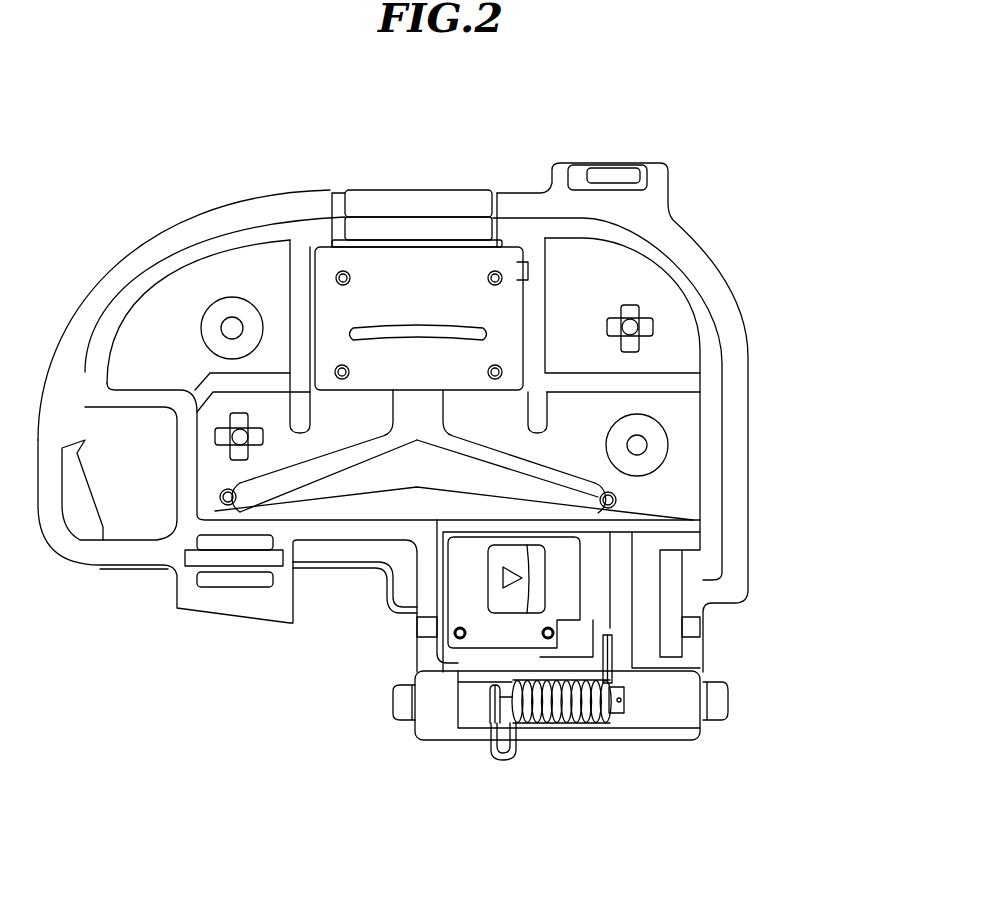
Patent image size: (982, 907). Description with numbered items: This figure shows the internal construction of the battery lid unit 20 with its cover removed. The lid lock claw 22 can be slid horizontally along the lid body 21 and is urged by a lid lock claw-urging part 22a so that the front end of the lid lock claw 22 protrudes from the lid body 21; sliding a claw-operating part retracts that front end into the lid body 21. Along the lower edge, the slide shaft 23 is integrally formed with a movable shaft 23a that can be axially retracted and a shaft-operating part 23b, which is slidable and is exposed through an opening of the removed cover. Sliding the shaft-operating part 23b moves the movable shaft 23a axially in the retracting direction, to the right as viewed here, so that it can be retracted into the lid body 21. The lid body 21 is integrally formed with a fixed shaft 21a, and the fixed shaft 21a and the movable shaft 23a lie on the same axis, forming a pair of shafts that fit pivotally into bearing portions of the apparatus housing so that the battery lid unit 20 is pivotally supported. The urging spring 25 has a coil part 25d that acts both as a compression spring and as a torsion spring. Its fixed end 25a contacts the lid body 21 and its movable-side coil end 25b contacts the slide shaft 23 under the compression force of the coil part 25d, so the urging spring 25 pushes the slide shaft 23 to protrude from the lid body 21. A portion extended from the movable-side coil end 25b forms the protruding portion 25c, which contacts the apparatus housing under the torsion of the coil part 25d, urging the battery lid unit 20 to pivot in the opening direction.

The battery lid unit 20 is at (685, 232).
The lid body 21 is at (197, 245).
The fixed shaft 21a is at (715, 712).
The lid lock claw 22 is at (433, 200).
The lid lock claw-urging part 22a is at (273, 470).
The slide shaft 23 is at (478, 710).
The movable shaft 23a is at (405, 712).
The shaft-operating part 23b is at (557, 578).
The urging spring 25 is at (562, 722).
The fixed end 25a is at (610, 657).
The movable-side coil end 25b is at (510, 700).
The protruding portion 25c is at (503, 760).
The coil part 25d is at (593, 725).